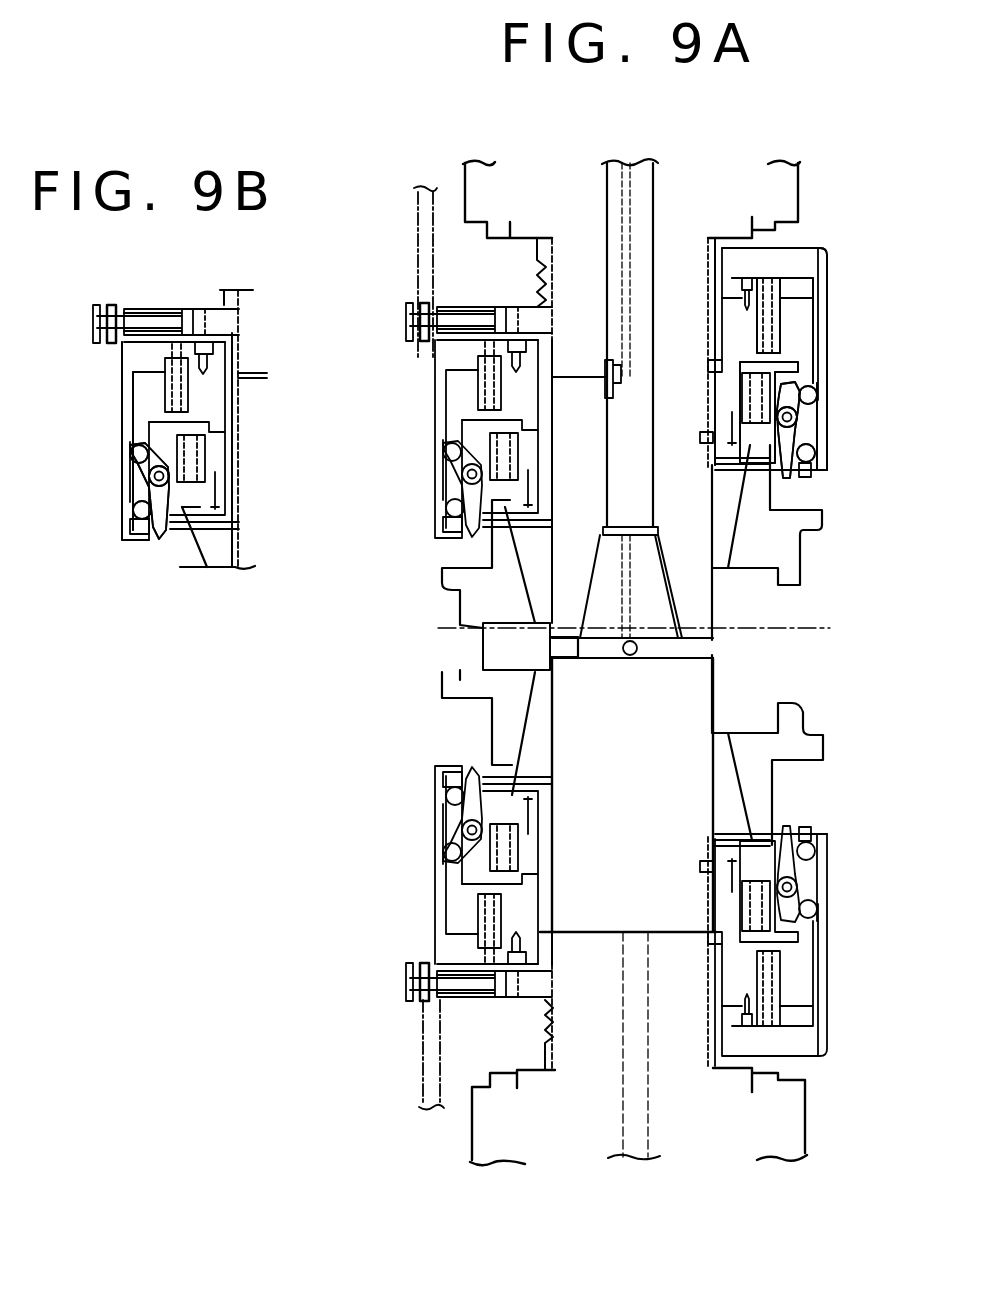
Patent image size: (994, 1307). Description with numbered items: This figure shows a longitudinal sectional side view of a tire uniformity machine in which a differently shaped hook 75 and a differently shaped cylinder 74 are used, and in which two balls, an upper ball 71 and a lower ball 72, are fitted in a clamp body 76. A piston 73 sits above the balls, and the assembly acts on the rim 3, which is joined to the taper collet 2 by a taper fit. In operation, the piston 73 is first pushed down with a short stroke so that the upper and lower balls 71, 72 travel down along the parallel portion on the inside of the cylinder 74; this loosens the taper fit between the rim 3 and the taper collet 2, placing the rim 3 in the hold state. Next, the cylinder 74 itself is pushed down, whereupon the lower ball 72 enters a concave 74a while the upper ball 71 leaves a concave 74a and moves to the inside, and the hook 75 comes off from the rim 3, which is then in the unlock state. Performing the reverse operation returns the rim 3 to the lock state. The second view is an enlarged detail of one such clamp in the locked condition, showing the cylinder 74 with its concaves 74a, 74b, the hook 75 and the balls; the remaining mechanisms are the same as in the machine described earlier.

In FIG. 9A, the taper collet 2 is at (722, 555).
In FIG. 9A, the rim 3 is at (790, 553).
In FIG. 9A, the upper ball 71 is at (815, 393).
In FIG. 9A, the lower ball 72 is at (810, 453).
In FIG. 9A, the piston 73 is at (783, 368).
In FIG. 9A, the cylinder 74 is at (827, 466).
In FIG. 9B, the cylinder 74 is at (125, 398).
In FIG. 9B, the concave 74a is at (132, 464).
In FIG. 9B, the second roller of clamp frame 74b is at (132, 511).
In FIG. 9A, the hook 75 is at (790, 470).
In FIG. 9B, the hook 75 is at (157, 530).
In FIG. 9A, the clamp body 76 is at (800, 325).